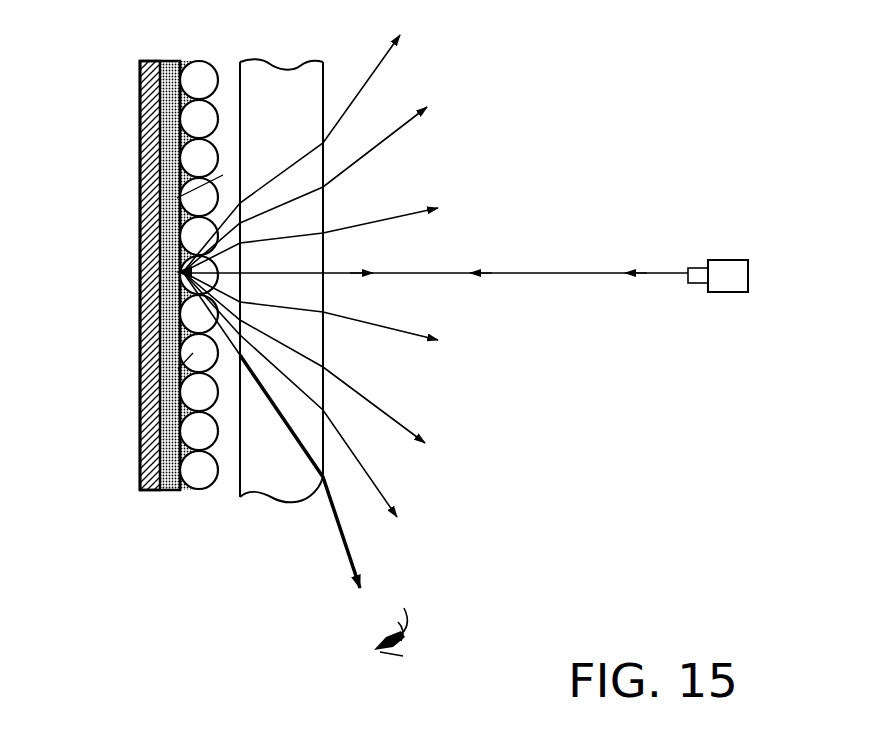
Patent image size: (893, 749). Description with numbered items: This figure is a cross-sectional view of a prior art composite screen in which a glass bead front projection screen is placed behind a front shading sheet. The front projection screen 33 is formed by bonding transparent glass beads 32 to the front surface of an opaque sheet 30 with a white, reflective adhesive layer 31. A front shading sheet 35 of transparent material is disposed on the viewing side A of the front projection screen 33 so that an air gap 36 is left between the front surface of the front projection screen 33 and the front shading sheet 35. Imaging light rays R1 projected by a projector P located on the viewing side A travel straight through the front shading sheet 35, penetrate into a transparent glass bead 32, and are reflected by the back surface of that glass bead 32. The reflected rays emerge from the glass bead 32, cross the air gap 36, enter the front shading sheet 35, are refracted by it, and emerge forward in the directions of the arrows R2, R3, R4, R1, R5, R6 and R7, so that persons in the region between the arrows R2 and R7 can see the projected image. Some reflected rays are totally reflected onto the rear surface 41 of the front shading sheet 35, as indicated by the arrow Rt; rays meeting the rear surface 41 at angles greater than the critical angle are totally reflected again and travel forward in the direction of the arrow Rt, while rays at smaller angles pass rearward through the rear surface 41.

The opaque sheet 30 is at (140, 250).
The white, reflective adhesive layer 31 is at (140, 122).
The transparent glass beads 32 is at (197, 72).
The front projection screen 33 is at (139, 157).
The front shading sheet 35 is at (287, 66).
The air gap 36 is at (223, 175).
The rear surface of the front shading sheet 41 is at (249, 432).
The imaging light rays R1 is at (540, 270).
The arrow indicating emerging reflected light direction R2 is at (384, 58).
The arrow indicating emerging reflected light direction R3 is at (388, 135).
The arrow indicating emerging reflected light direction R4 is at (405, 212).
The arrow indicating emerging reflected light direction R5 is at (397, 330).
The arrow indicating emerging reflected light direction R6 is at (392, 415).
The arrow indicating emerging reflected light direction R7 is at (377, 483).
The totally reflected light rays Rt is at (250, 341).
The projector P is at (726, 270).
The viewing side A is at (685, 377).